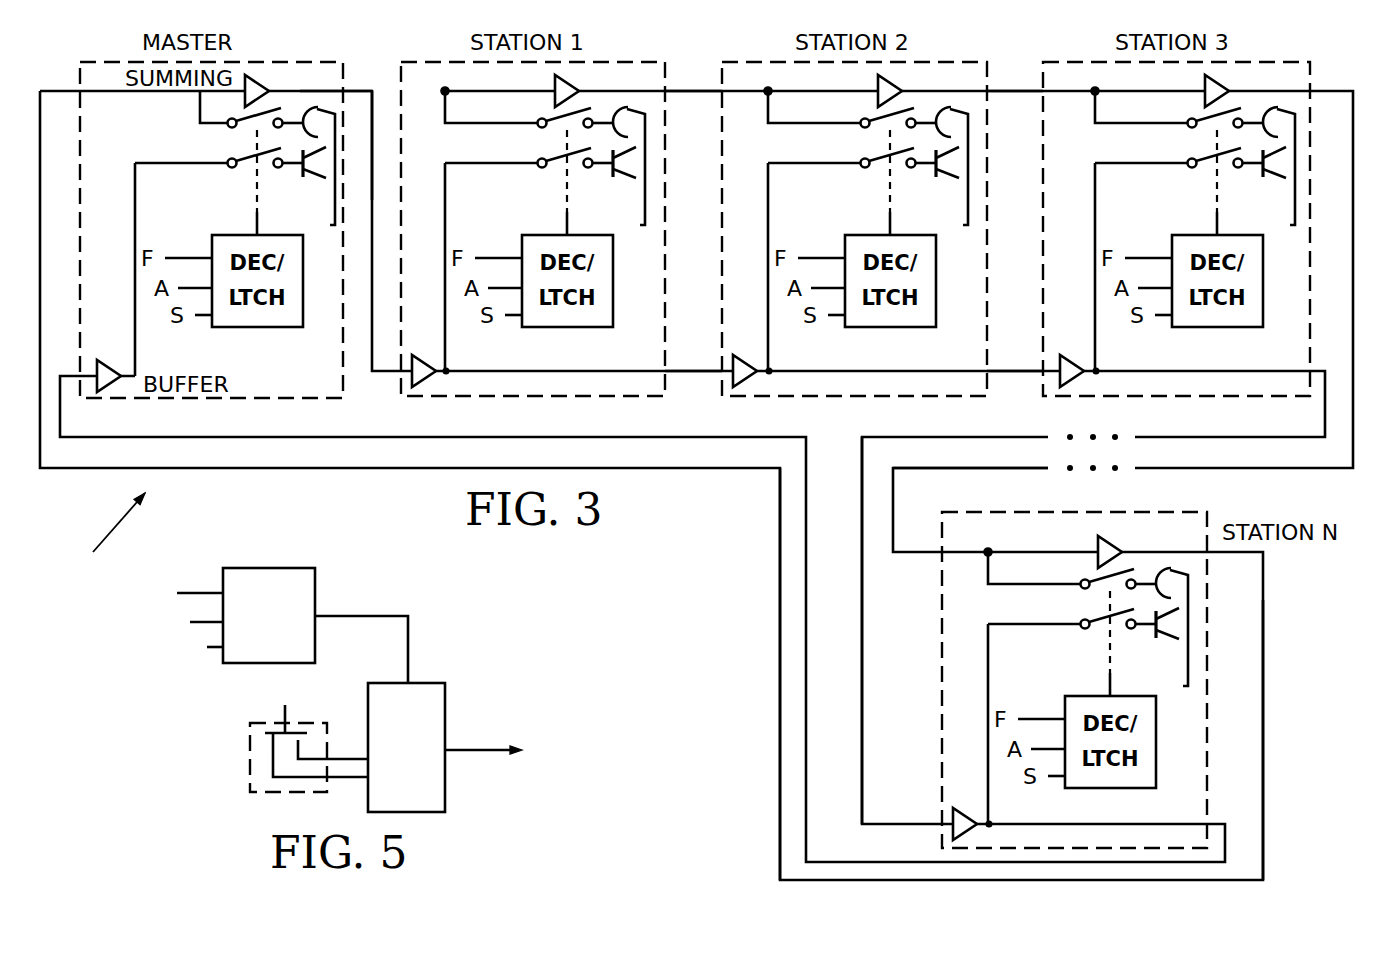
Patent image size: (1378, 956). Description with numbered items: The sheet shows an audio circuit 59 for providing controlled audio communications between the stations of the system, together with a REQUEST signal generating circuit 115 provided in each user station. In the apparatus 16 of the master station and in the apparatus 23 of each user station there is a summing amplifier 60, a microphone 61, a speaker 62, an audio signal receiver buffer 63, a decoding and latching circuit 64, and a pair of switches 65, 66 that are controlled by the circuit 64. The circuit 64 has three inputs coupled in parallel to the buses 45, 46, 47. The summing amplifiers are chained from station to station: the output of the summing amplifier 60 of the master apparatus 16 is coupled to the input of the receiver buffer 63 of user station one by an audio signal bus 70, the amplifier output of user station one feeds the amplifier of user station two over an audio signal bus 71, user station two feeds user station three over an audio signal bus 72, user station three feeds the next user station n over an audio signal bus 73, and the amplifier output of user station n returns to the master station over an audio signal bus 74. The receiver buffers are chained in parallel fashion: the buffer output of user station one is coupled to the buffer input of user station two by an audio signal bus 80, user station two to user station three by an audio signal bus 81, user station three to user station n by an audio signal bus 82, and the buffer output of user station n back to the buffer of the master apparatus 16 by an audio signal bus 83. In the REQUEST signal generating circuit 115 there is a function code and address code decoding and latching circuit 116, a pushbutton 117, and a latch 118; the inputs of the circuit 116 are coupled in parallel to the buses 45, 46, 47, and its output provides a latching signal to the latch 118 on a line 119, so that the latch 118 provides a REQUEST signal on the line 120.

In FIG. 3, the apparatus of the master station 16 is at (211, 251).
In FIG. 3, the apparatus of the user station 23 is at (855, 455).
In FIG. 3, the bus 45 is at (667, 469).
In FIG. 5, the bus 45 is at (201, 572).
In FIG. 3, the bus 46 is at (663, 471).
In FIG. 5, the bus 46 is at (196, 577).
In FIG. 3, the bus 47 is at (658, 564).
In FIG. 5, the bus 47 is at (197, 672).
In FIG. 3, the audio circuit 59 is at (103, 530).
In FIG. 3, the summing amplifier 60 is at (771, 298).
In FIG. 3, the microphone 61 is at (798, 404).
In FIG. 3, the speaker 62 is at (780, 414).
In FIG. 3, the audio signal receiver buffer 63 is at (586, 574).
In FIG. 3, the decoding and latching circuit 64 is at (737, 478).
In FIG. 3, the switch 65 is at (722, 338).
In FIG. 3, the switch 66 is at (699, 483).
In FIG. 3, the audio signal bus 70 is at (353, 116).
In FIG. 3, the audio signal bus 71 is at (708, 62).
In FIG. 3, the audio signal bus 72 is at (1024, 62).
In FIG. 3, the audio signal bus 73 is at (971, 486).
In FIG. 3, the audio signal bus 74 is at (1301, 740).
In FIG. 3, the audio signal bus 80 is at (686, 402).
In FIG. 3, the audio signal bus 81 is at (1006, 400).
In FIG. 3, the audio signal bus 82 is at (837, 630).
In FIG. 3, the audio signal bus 83 is at (744, 674).
In FIG. 5, the REQUEST signal generating circuit 115 is at (484, 599).
In FIG. 5, the function code and address code decoding and latching circuit 116 is at (296, 601).
In FIG. 5, the pushbutton 117 is at (269, 761).
In FIG. 5, the latch 118 is at (446, 760).
In FIG. 5, the line 119 is at (377, 631).
In FIG. 5, the line 120 is at (527, 717).